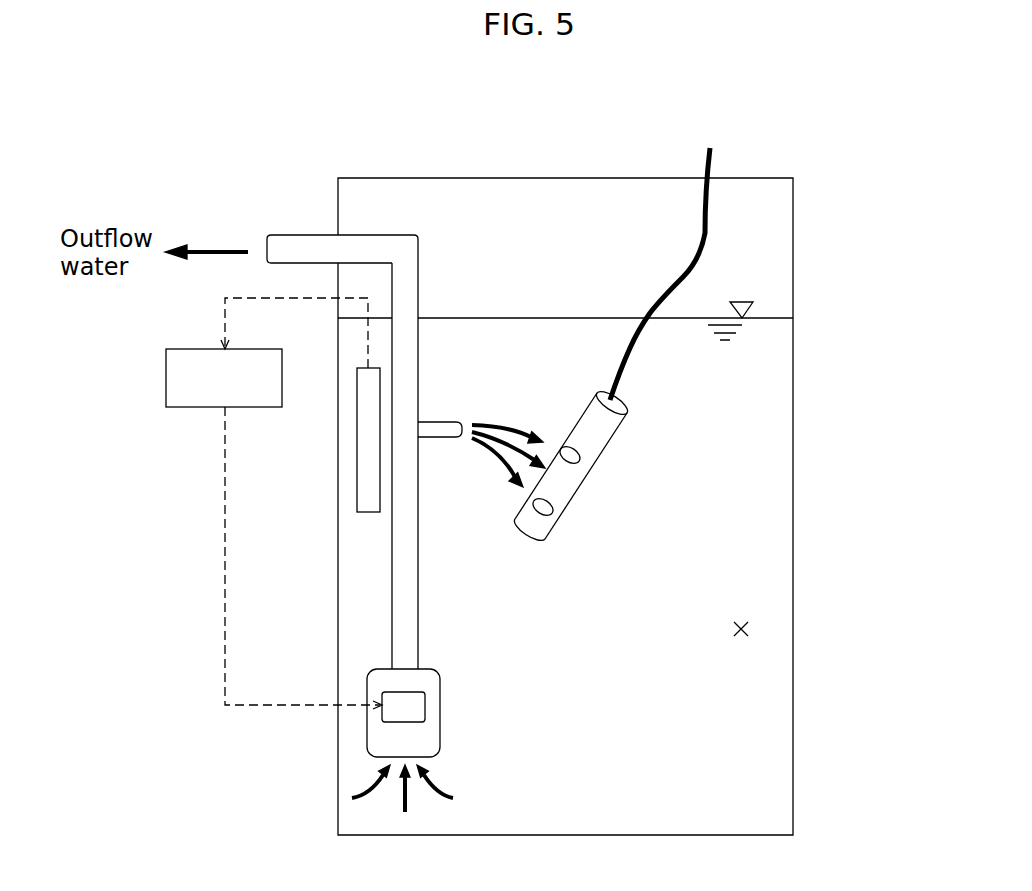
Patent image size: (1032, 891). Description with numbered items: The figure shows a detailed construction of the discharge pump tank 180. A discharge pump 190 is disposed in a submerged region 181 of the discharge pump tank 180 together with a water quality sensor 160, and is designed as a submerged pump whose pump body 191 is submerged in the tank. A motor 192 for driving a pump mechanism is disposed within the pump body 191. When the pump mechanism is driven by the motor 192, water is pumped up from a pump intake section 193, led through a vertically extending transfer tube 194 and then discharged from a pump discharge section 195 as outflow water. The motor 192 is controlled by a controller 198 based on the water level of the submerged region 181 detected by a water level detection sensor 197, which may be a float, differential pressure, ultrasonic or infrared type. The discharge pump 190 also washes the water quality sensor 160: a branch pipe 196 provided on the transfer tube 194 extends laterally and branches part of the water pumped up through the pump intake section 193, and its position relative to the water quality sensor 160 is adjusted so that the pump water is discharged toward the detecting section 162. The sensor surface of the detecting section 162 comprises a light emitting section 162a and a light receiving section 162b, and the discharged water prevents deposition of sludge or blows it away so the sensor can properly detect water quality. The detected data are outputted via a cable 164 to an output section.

The water quality sensor 160 is at (628, 420).
The detecting section 162 is at (568, 490).
The light emitting section 162a is at (572, 457).
The light receiving section 162b is at (545, 516).
The cable 164 is at (705, 212).
The discharge pump tank 180 is at (795, 328).
The submerged region 181 is at (745, 630).
The discharge pump 190 is at (395, 215).
The pump body 191 is at (440, 748).
The motor 192 is at (385, 718).
The pump intake section 193 is at (377, 757).
The transfer tube 194 is at (392, 530).
The pump discharge section 195 is at (275, 247).
The branch pipe 196 is at (440, 422).
The water level detection sensor 197 is at (368, 422).
The controller 198 is at (180, 408).